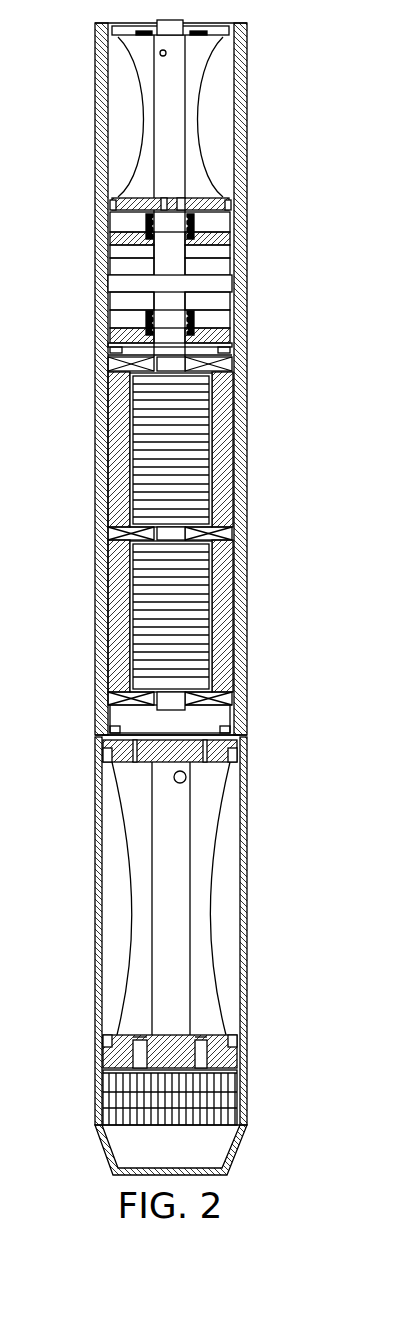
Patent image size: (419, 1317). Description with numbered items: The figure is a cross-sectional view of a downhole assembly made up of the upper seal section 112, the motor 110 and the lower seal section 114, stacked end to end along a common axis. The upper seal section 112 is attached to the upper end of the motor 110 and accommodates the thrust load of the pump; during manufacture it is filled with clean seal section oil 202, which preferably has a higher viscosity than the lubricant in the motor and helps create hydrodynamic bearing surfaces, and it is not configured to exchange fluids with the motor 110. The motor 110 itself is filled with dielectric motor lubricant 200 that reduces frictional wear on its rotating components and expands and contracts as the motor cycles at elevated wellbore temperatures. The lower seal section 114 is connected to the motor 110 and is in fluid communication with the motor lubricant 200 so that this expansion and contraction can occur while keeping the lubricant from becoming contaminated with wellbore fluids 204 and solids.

The motor 110 is at (269, 532).
The upper seal section 112 is at (284, 226).
The lower seal section 114 is at (270, 876).
The motor lubricant 200 is at (134, 353).
The seal section oil 202 is at (138, 170).
The wellbore fluids 204 is at (210, 1160).